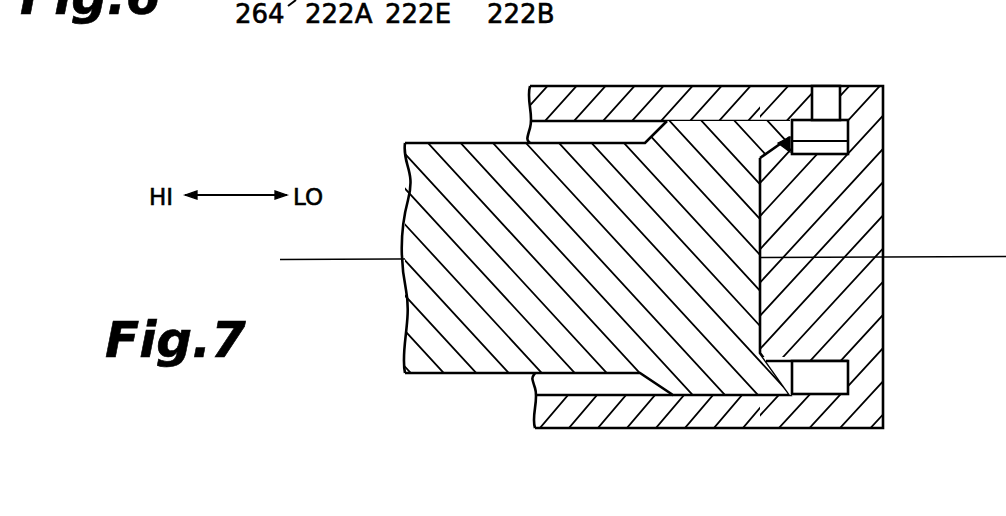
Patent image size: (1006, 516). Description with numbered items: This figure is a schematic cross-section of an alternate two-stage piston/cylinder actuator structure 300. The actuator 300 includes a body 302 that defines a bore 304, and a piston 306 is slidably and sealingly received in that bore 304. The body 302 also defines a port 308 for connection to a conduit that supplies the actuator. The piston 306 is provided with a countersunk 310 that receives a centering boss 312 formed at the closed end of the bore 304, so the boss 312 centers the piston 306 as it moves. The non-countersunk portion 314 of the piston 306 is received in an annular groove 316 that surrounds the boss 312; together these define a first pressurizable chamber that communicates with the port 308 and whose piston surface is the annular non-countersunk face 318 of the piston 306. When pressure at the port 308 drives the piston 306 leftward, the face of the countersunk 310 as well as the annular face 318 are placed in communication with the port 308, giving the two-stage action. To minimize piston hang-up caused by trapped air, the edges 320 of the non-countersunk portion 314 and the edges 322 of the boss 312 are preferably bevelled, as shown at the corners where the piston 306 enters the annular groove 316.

The two-stage piston/cylinder actuator structure 300 is at (765, 75).
The body 302 is at (633, 103).
The bore 304 is at (560, 122).
The piston 306 is at (548, 209).
The port 308 is at (835, 82).
The countersunk 310 is at (762, 313).
The centering boss 312 is at (777, 250).
The non-countersunk portion 314 is at (770, 380).
The annular groove 316 is at (840, 382).
The annular non-countersunk face 318 is at (795, 140).
The edges of the non-countersunk portion 320 is at (795, 144).
The edges of the boss 322 is at (772, 151).